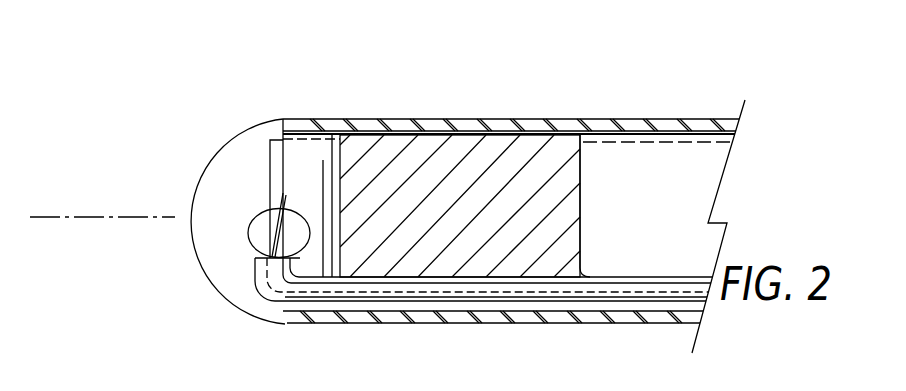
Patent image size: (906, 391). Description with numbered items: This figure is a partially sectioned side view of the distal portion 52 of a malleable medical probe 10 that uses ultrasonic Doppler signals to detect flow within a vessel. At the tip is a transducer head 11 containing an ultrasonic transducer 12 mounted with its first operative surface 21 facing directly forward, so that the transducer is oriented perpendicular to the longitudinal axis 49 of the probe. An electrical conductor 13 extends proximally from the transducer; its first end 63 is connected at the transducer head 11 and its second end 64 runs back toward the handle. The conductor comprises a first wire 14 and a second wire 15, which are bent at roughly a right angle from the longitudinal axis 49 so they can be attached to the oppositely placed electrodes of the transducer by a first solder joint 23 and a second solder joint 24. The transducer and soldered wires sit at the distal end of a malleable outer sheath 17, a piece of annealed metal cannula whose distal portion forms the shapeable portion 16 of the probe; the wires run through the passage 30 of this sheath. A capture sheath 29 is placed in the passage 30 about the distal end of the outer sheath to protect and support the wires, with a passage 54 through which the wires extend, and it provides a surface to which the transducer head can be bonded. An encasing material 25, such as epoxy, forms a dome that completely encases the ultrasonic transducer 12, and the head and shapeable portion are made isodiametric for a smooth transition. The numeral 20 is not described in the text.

The malleable medical probe 10 is at (560, 31).
The transducer head 11 is at (236, 240).
The ultrasonic transducer 12 is at (283, 192).
The electrical conductor 13 is at (294, 307).
The first wire 14 is at (258, 280).
The second wire 15 is at (330, 214).
The shapeable portion 16 is at (600, 53).
The outer sheath 17 is at (488, 120).
The handle 20 is at (113, 5).
The first operative surface 21 is at (268, 158).
The first solder joint 23 is at (250, 222).
The second solder joint 24 is at (292, 214).
The encasing material 25 is at (36, 0).
The capture sheath 29 is at (462, 147).
The passage 30 is at (587, 163).
The longitudinal axis 49 is at (92, 218).
The distal portion 52 is at (434, 71).
The passage 54 is at (582, 276).
The first end 63 is at (182, 215).
The second end 64 is at (780, 164).